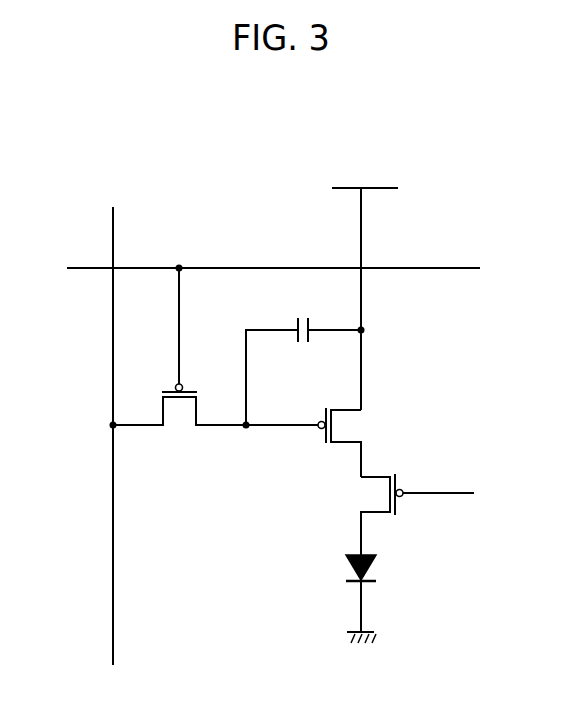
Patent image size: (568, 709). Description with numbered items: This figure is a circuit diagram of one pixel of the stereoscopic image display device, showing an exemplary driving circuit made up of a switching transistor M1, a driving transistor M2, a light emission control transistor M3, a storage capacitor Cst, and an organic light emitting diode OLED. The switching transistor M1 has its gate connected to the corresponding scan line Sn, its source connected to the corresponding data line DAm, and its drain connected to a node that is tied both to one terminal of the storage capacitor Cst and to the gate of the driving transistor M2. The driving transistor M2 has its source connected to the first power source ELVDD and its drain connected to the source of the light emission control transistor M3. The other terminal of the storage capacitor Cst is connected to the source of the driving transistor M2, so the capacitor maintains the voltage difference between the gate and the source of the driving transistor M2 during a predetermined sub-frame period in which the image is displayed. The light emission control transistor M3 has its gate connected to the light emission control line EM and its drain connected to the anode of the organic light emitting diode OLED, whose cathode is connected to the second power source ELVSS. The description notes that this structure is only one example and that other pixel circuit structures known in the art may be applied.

The data line DAm is at (122, 424).
The scan line Sn is at (258, 268).
The first power source ELVDD is at (365, 287).
The switching transistor M1 is at (181, 361).
The storage capacitor Cst is at (303, 371).
The driving transistor M2 is at (319, 442).
The light emission control transistor M3 is at (366, 514).
The light emission control line EM is at (456, 495).
The organic light emitting diode OLED is at (392, 593).
The second power source ELVSS is at (368, 652).